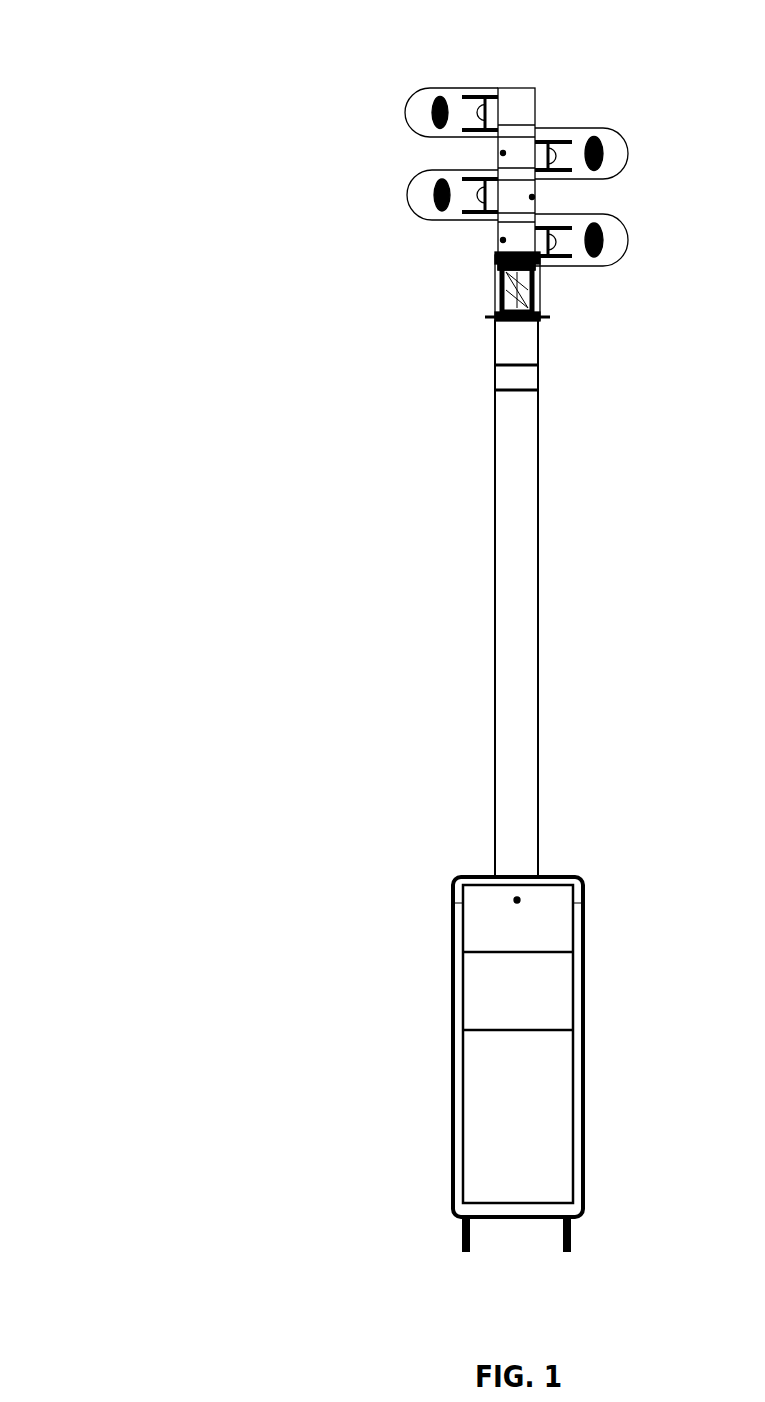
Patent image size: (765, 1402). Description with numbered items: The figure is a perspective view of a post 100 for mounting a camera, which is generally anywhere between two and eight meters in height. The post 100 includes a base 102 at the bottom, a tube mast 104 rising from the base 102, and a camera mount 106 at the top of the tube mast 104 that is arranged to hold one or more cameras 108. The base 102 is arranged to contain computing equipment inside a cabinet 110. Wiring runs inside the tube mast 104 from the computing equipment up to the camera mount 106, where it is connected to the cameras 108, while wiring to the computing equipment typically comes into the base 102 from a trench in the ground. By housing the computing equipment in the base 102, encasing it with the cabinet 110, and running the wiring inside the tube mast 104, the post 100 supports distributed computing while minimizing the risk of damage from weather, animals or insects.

The post 100 is at (158, 190).
The base 102 is at (320, 1036).
The tube mast 104 is at (503, 602).
The camera mount 106 is at (532, 108).
The camera 108 is at (433, 109).
The cabinet 110 is at (483, 983).